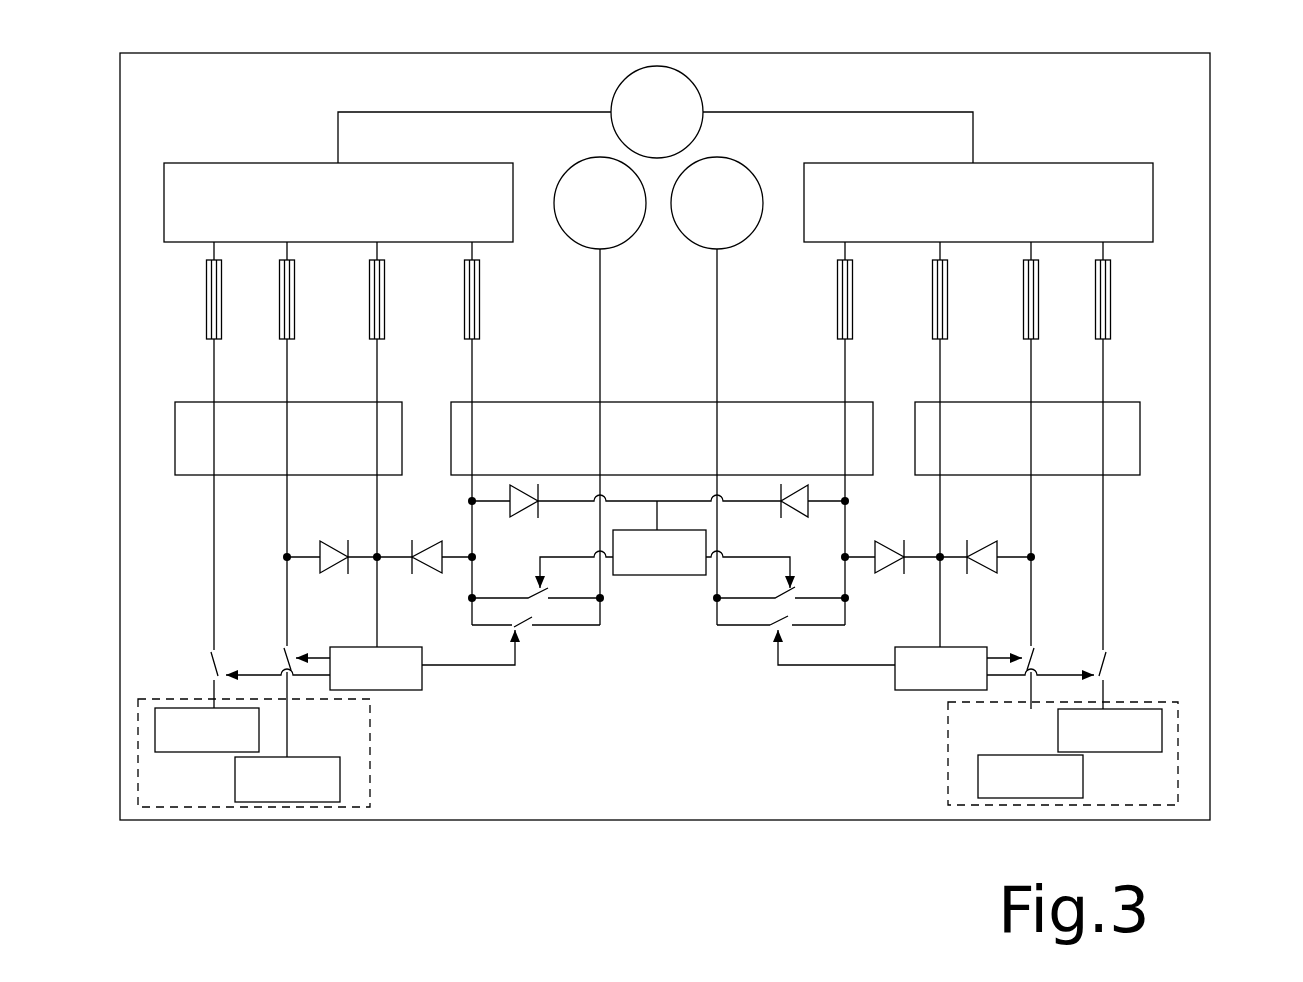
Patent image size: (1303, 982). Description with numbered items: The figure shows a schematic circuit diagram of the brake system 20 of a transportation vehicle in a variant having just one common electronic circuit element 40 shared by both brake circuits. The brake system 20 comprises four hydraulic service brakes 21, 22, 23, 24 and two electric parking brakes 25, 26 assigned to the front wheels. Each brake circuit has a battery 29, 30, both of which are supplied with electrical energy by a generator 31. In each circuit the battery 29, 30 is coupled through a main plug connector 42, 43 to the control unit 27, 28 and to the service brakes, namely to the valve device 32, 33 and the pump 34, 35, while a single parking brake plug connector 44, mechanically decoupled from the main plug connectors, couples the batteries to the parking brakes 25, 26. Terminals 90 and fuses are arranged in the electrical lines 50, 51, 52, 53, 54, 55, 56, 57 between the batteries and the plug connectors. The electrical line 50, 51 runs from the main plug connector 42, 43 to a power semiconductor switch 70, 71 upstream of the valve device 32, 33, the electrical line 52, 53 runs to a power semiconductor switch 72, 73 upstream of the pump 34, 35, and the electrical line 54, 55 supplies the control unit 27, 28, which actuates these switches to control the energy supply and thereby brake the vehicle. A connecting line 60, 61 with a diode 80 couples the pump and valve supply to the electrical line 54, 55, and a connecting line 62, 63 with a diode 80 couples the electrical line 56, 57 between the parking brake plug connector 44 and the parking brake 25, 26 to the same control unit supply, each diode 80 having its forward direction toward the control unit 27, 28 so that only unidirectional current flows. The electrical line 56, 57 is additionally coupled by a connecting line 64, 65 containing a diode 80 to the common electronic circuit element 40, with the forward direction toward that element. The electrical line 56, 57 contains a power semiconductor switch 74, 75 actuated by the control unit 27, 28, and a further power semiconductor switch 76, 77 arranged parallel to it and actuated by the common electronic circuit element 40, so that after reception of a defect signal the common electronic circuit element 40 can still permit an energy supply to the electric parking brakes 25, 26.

The brake system 20 is at (1230, 106).
The hydraulic brake 21 is at (239, 797).
The hydraulic brake 22 is at (1090, 786).
The hydraulic brake 23 is at (1090, 786).
The hydraulic brake 24 is at (239, 797).
The electric parking brake 25 is at (717, 391).
The electric parking brake 26 is at (600, 391).
The control unit 27 is at (376, 668).
The control unit 28 is at (941, 668).
The battery 29 is at (338, 202).
The battery 30 is at (978, 202).
The generator 31 is at (655, 114).
The valve device 32 is at (207, 730).
The valve device 33 is at (1110, 730).
The pump 34 is at (287, 779).
The pump 35 is at (1030, 776).
The common electronic circuit element 40 is at (659, 552).
The main plug connector 42 is at (288, 438).
The main plug connector 43 is at (1027, 438).
The parking brake plug connector 44 is at (662, 438).
The electrical line 50 is at (212, 559).
The electrical line 51 is at (1105, 580).
The electrical line 52 is at (285, 596).
The electrical line 53 is at (1033, 585).
The electrical line 54 is at (375, 617).
The electrical line 55 is at (942, 607).
The electrical line 56 is at (470, 532).
The electrical line 57 is at (847, 501).
The connecting line 60 is at (294, 558).
The connecting line 61 is at (1031, 548).
The connecting line 62 is at (388, 557).
The connecting line 63 is at (908, 553).
The connecting line 64 is at (568, 501).
The connecting line 65 is at (746, 502).
The power semiconductor switch 70 is at (212, 672).
The power semiconductor switch 71 is at (1106, 678).
The power semiconductor switch 72 is at (284, 657).
The power semiconductor switch 73 is at (1032, 656).
The power semiconductor switch 74 is at (516, 637).
The power semiconductor switch 75 is at (788, 633).
The power semiconductor switch 76 is at (526, 591).
The power semiconductor switch 77 is at (780, 593).
The diode 80 is at (520, 485).
The terminal 90 is at (221, 337).